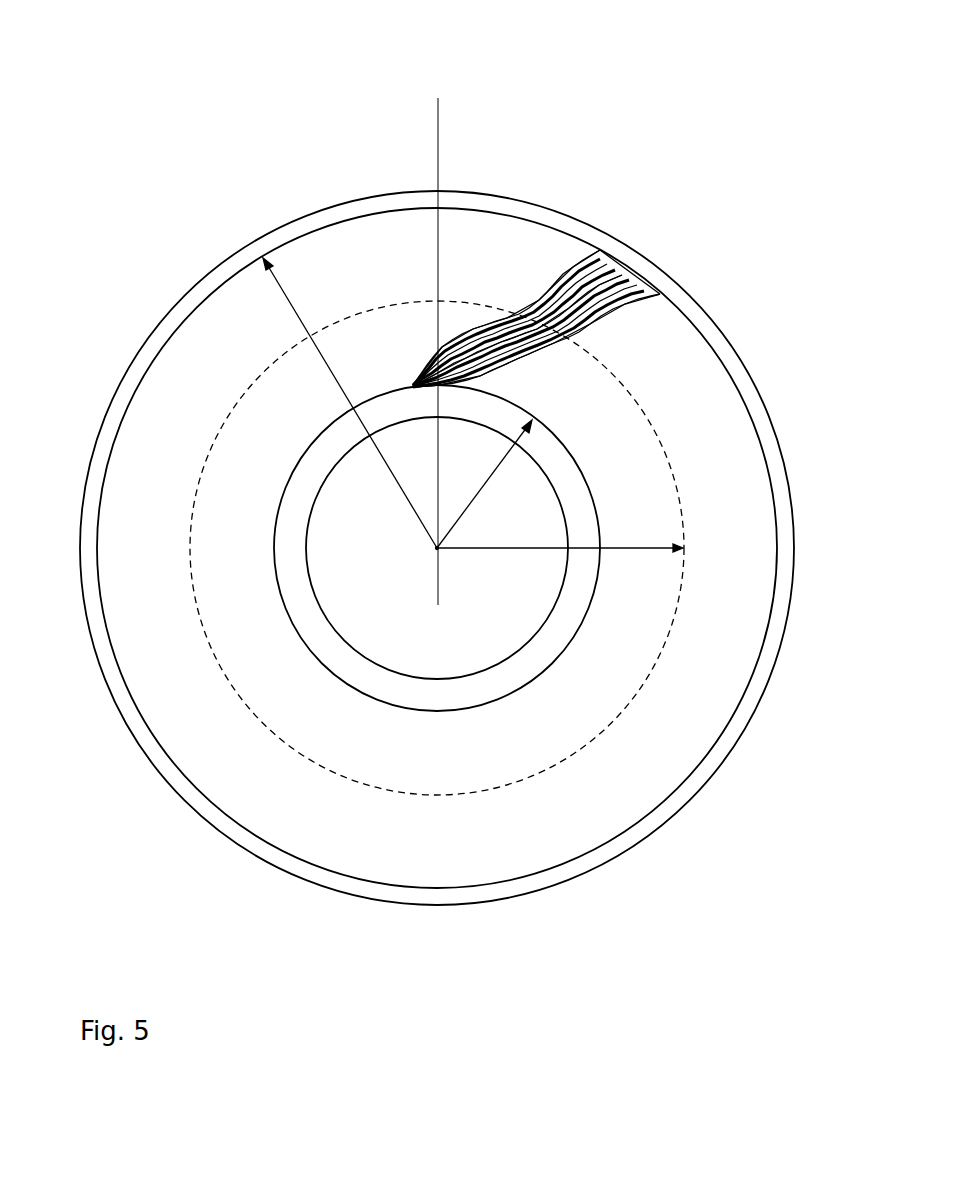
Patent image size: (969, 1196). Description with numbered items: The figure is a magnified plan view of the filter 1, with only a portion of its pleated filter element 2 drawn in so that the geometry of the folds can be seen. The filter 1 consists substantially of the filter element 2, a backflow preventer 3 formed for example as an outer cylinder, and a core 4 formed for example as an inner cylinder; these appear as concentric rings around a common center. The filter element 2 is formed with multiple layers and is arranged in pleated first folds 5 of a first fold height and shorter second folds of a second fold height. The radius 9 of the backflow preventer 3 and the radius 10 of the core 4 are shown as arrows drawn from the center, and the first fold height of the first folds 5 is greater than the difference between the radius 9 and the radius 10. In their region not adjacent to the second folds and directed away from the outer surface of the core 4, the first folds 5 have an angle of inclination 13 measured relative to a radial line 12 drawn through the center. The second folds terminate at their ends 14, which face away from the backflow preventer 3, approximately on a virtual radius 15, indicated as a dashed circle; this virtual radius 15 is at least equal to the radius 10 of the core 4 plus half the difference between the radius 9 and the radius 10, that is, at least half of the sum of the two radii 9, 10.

The filter 1 is at (262, 122).
The filter element 2 is at (541, 256).
The backflow preventer 3 is at (713, 325).
The core 4 is at (580, 505).
The first folds 5 is at (432, 362).
The radius of the backflow preventer 9 is at (275, 303).
The radius of the core 10 is at (490, 452).
The radial line 12 is at (440, 152).
The angle of inclination 13 is at (447, 338).
The ends of the second folds 14 is at (612, 358).
The virtual radius 15 is at (536, 550).